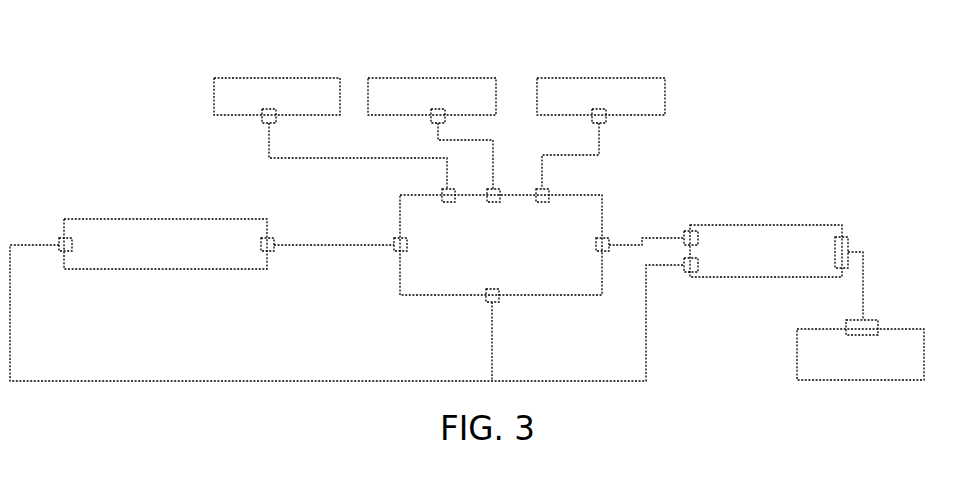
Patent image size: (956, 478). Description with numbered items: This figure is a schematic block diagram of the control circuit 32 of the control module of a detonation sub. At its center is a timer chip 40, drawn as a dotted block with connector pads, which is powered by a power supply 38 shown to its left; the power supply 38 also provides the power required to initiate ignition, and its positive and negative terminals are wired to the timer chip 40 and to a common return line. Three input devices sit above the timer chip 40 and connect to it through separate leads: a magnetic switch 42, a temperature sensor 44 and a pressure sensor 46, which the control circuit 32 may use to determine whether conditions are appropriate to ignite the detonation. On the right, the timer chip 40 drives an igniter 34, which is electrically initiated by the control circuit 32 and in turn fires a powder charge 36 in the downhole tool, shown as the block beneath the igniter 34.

The control circuit 32 is at (130, 86).
The igniter 34 is at (746, 232).
The powder charge 36 is at (820, 370).
The power supply 38 is at (155, 230).
The timer chip 40 is at (436, 278).
The magnetic switch 42 is at (268, 87).
The temperature sensor 44 is at (430, 87).
The pressure sensor 46 is at (601, 87).